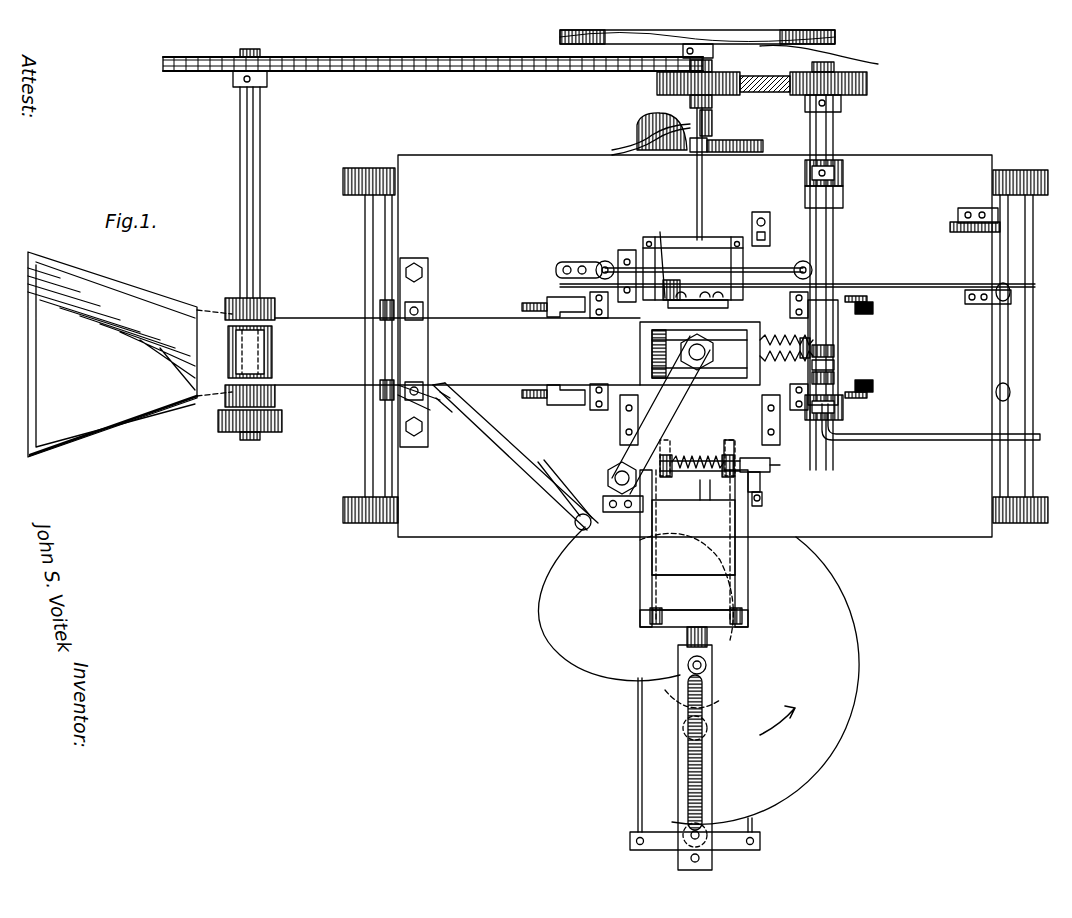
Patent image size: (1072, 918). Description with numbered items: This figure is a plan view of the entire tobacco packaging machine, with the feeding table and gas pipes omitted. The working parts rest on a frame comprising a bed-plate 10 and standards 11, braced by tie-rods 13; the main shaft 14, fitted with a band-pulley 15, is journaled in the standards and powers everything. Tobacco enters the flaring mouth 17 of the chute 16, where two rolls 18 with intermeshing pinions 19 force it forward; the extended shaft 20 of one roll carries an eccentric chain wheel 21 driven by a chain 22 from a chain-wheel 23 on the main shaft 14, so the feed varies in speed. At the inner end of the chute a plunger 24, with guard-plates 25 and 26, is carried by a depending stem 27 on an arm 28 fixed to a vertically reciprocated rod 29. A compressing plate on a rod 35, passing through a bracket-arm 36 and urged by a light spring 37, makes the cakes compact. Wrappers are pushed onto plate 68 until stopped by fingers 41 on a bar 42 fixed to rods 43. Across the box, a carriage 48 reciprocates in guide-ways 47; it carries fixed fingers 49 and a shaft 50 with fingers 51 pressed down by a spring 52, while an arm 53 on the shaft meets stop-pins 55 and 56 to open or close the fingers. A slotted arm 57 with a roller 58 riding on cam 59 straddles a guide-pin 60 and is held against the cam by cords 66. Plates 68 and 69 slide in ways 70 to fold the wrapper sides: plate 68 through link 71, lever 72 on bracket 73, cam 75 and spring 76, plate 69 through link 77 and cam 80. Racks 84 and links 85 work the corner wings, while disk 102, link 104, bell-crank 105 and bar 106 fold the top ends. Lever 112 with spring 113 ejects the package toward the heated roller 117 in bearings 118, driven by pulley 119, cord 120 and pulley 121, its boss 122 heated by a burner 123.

The bed-plate 10 is at (695, 346).
The standards 11 is at (372, 170).
The tie-rods 13 is at (362, 246).
The main shaft 14 is at (834, 60).
The band-pulley 15 is at (836, 37).
The tube or chute 16 is at (457, 352).
The flaring mouth 17 is at (130, 354).
The rolls 18 is at (272, 352).
The intermeshing pinions 19 is at (280, 422).
The extended shaft 20 is at (252, 218).
The eccentric chain wheel 21 is at (206, 72).
The chain 22 is at (418, 72).
The chain-wheel 23 is at (660, 65).
The plunger 24 is at (655, 358).
The guard-plate 25 is at (650, 352).
The guard-plate 26 is at (708, 352).
The depending stem 27 is at (652, 340).
The arm 28 is at (661, 415).
The rod 29 is at (612, 470).
The rod 35 is at (838, 368).
The bracket-arm 36 is at (838, 360).
The light spring 37 is at (838, 376).
The fingers 41 is at (692, 282).
The bar 42 is at (727, 258).
The rods 43 is at (606, 264).
The guide-ways 47 is at (642, 596).
The frame or carriage 48 is at (693, 555).
The fixed fingers 49 is at (712, 448).
The shaft 50 is at (782, 466).
The fingers 51 is at (702, 452).
The spring 52 is at (700, 455).
The arm 53 is at (762, 478).
The adjustable stop-pin 55 is at (764, 498).
The adjustable stop-pin 56 is at (764, 242).
The arm 57 is at (682, 768).
The roller 58 is at (690, 830).
The cam 59 is at (850, 700).
The guide-pin 60 is at (708, 666).
The cords 66 is at (637, 800).
The plate 68 is at (672, 267).
The plate 69 is at (697, 438).
The ways 70 is at (637, 255).
The link 71 is at (703, 174).
The lever 72 is at (710, 118).
The bracket 73 is at (693, 155).
The cam 75 is at (650, 128).
The spring 76 is at (638, 152).
The link 77 is at (713, 488).
The cam 80 is at (665, 690).
The rack 84 is at (560, 305).
The link 85 is at (522, 307).
The disk 102 is at (658, 255).
The link 104 is at (935, 285).
The bell-crank 105 is at (1000, 254).
The bar 106 is at (958, 222).
The lever 112 is at (480, 432).
The spring 113 is at (556, 448).
The roller 117 is at (830, 219).
The bearings 118 is at (844, 170).
The pulley 119 is at (858, 88).
The cord 120 is at (775, 78).
The pulley 121 is at (722, 90).
The circumferential boss 122 is at (844, 354).
The gas pipe and burner 123 is at (924, 440).